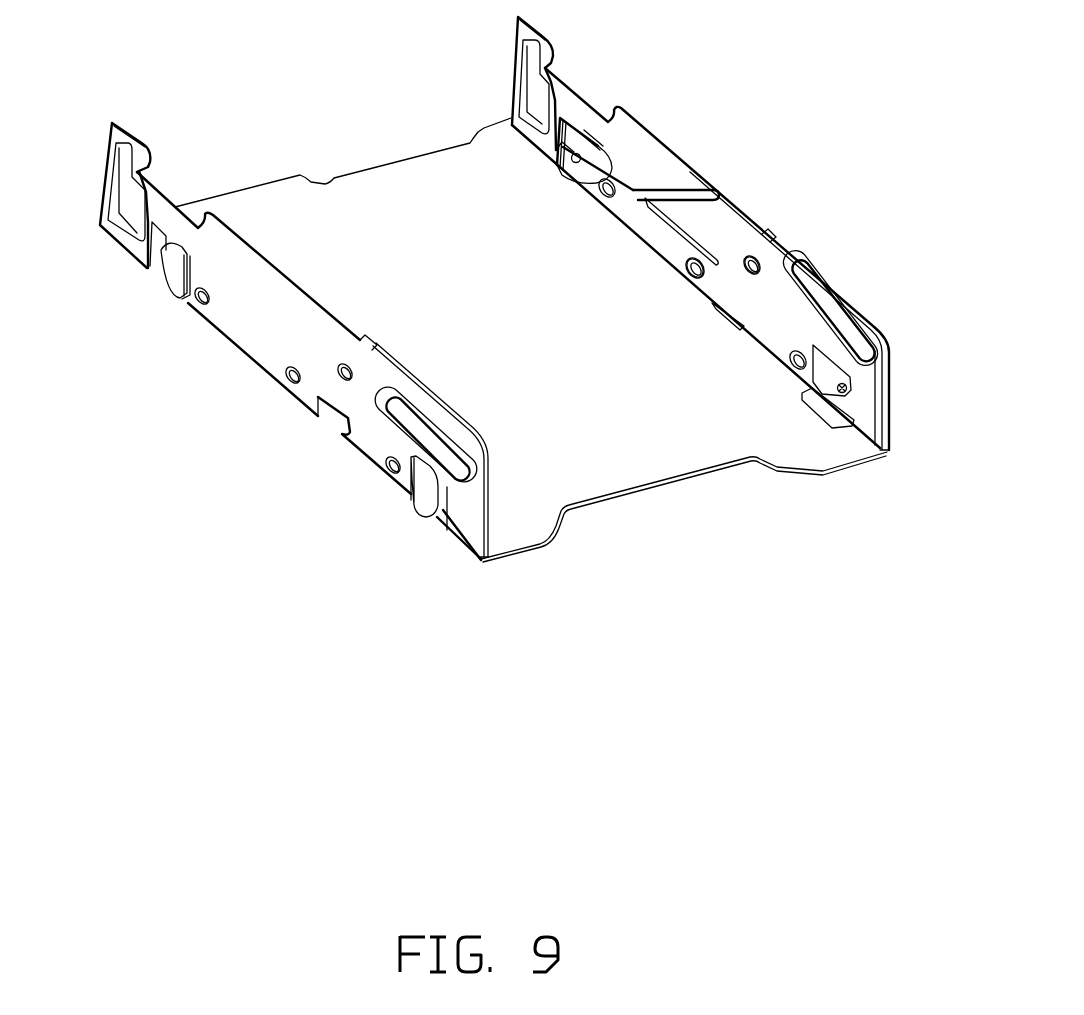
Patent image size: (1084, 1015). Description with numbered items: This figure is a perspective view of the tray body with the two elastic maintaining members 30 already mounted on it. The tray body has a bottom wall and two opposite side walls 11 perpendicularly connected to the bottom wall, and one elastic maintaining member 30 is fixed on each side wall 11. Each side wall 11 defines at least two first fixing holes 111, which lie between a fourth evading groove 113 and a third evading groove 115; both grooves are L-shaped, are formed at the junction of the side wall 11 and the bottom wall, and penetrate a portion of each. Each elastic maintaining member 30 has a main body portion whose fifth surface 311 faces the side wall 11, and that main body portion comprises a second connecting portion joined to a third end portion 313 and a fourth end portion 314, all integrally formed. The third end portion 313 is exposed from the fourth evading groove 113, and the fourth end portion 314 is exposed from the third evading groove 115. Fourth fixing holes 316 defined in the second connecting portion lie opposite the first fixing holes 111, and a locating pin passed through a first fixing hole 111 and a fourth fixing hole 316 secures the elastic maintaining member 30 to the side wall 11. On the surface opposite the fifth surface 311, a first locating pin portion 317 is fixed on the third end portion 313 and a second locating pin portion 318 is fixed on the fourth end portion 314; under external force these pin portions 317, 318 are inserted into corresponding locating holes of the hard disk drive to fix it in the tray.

The side wall 11 is at (128, 192).
The elastic maintaining member 30 is at (757, 326).
The first fixing hole 111 is at (712, 257).
The fourth evading groove 113 is at (151, 239).
The third evading groove 115 is at (852, 418).
The fifth surface 311 is at (652, 222).
The third end portion 313 is at (168, 273).
The fourth end portion 314 is at (824, 370).
The fourth fixing hole 316 is at (752, 265).
The first locating pin portion 317 is at (594, 140).
The second locating pin portion 318 is at (891, 364).